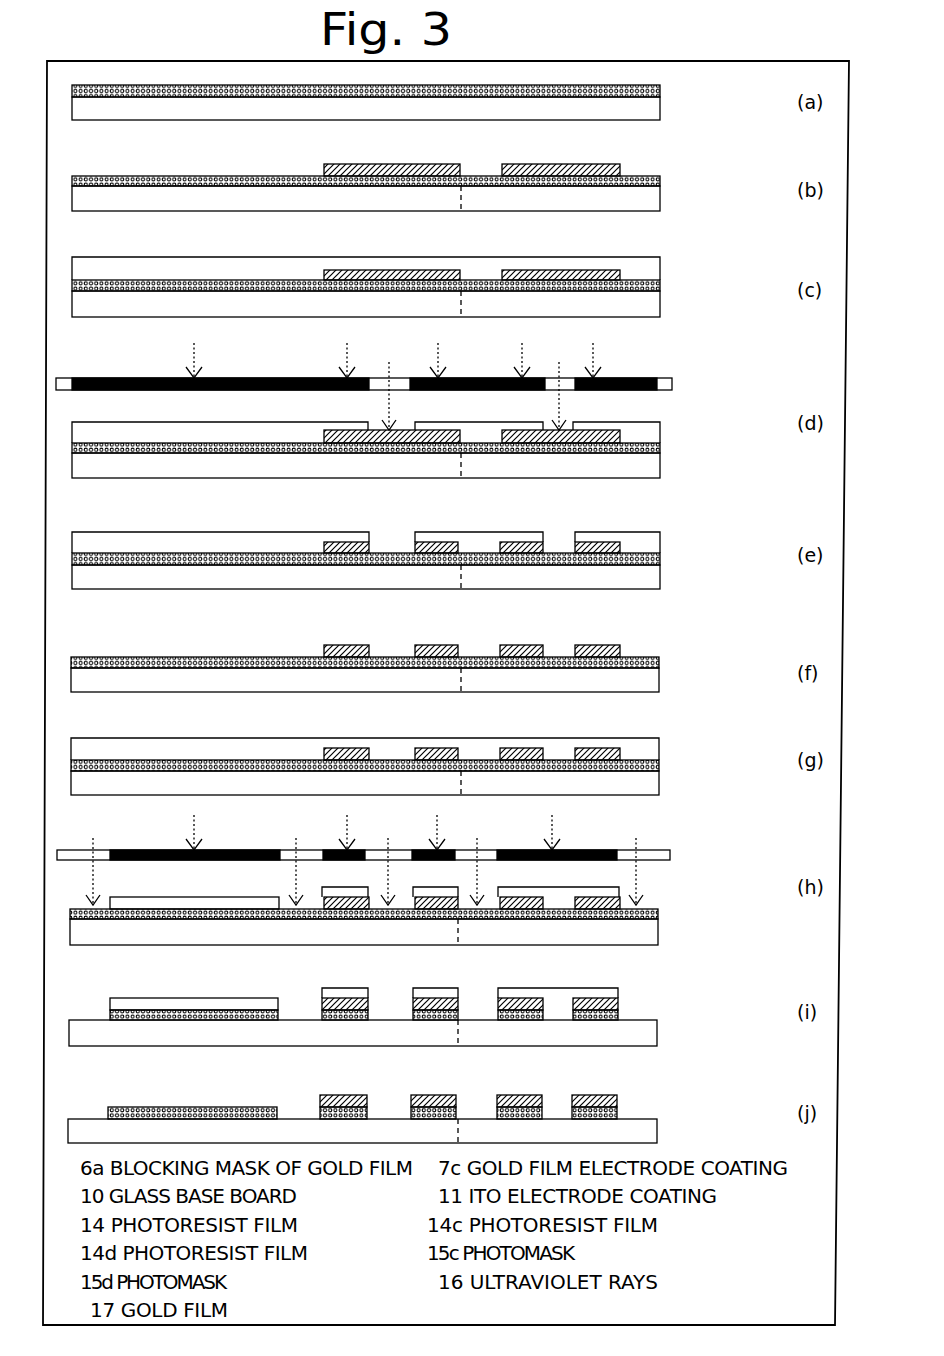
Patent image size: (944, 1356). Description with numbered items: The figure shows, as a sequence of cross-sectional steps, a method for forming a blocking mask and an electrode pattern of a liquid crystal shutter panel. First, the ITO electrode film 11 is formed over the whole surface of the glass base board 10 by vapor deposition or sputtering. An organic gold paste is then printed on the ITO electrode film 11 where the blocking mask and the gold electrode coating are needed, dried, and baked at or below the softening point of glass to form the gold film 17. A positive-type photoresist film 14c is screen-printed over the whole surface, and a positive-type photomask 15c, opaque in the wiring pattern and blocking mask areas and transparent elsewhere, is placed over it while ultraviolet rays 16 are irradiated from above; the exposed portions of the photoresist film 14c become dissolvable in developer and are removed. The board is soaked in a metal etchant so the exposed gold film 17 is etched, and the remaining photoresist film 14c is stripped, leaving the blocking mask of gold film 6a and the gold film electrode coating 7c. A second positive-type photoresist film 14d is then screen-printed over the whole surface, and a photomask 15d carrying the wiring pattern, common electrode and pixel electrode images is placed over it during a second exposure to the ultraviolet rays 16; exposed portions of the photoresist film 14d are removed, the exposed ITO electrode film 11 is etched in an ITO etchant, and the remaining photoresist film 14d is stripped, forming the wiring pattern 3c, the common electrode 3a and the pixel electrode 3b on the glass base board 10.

The common electrode 3a is at (644, 1096).
The pixel electrode 3b is at (192, 1090).
The wiring pattern 3c is at (325, 1090).
The blocking mask of gold film 6a is at (558, 855).
The gold film electrode coating 7c is at (389, 857).
The glass base board 10 is at (405, 625).
The ITO electrode film 11 is at (406, 598).
The photoresist film 14c is at (412, 403).
The photoresist film 14d is at (412, 868).
The photomask 15c is at (414, 384).
The photomask 15d is at (412, 850).
The ultraviolet rays 16 is at (386, 621).
The gold film 17 is at (472, 340).